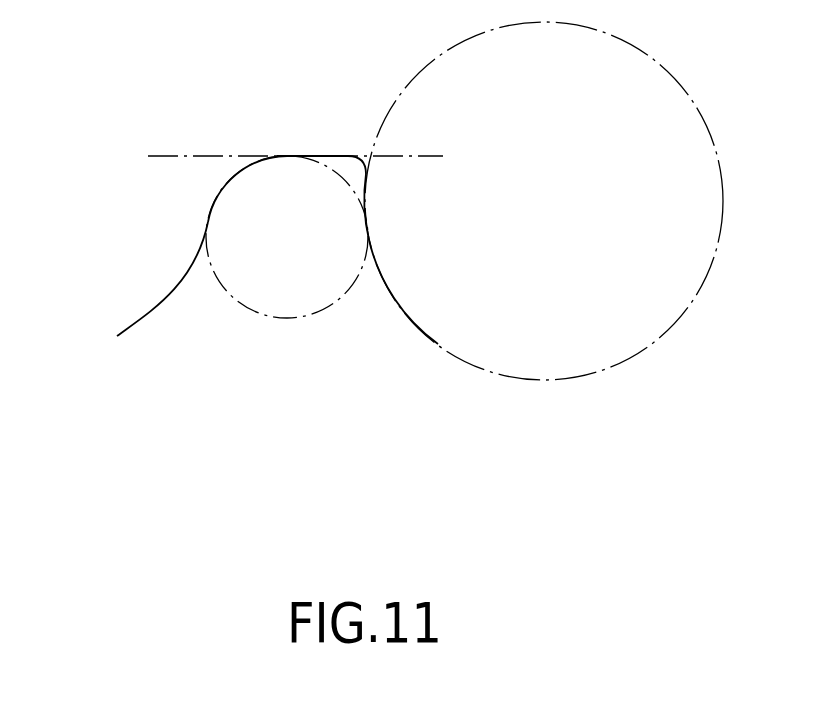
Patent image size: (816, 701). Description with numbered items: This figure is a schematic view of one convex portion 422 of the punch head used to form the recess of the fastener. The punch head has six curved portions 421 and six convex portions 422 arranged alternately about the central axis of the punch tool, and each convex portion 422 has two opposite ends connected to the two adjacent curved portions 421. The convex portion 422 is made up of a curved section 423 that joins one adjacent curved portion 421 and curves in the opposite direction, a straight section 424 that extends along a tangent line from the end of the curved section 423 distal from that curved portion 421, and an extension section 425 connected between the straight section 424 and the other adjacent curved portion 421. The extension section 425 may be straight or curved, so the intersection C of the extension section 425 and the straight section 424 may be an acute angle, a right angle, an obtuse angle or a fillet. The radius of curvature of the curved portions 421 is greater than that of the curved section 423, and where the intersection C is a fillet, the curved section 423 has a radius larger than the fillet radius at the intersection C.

The curved portion 421 is at (155, 304).
The convex portion 422 is at (334, 122).
The curved section 423 is at (230, 180).
The straight section 424 is at (315, 156).
The extension section 425 is at (366, 183).
The intersection C is at (358, 133).